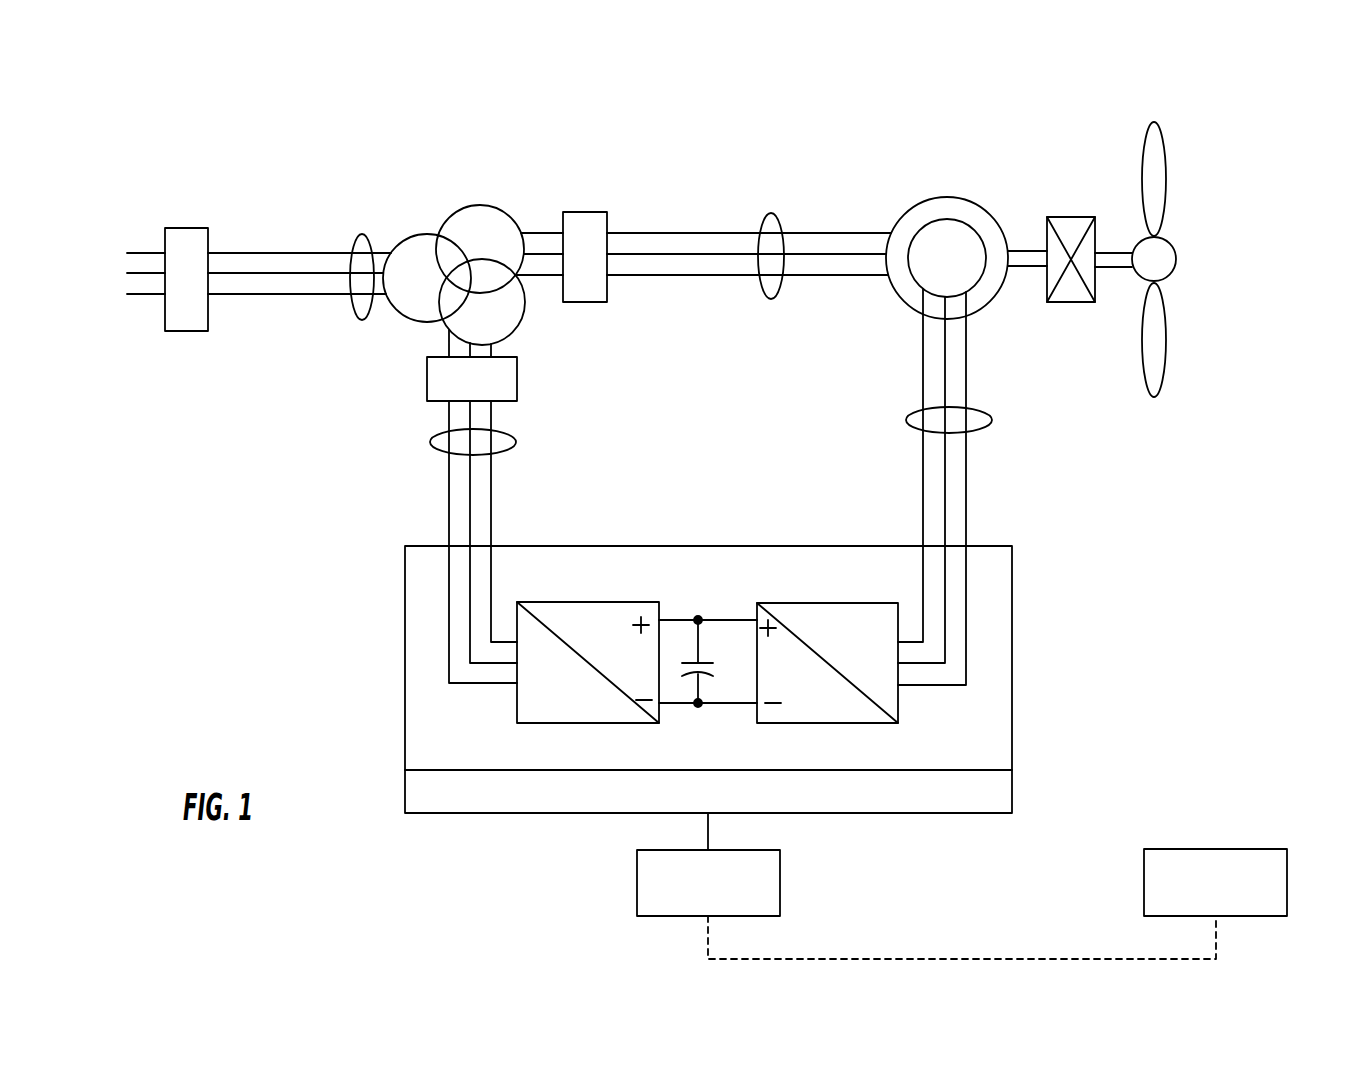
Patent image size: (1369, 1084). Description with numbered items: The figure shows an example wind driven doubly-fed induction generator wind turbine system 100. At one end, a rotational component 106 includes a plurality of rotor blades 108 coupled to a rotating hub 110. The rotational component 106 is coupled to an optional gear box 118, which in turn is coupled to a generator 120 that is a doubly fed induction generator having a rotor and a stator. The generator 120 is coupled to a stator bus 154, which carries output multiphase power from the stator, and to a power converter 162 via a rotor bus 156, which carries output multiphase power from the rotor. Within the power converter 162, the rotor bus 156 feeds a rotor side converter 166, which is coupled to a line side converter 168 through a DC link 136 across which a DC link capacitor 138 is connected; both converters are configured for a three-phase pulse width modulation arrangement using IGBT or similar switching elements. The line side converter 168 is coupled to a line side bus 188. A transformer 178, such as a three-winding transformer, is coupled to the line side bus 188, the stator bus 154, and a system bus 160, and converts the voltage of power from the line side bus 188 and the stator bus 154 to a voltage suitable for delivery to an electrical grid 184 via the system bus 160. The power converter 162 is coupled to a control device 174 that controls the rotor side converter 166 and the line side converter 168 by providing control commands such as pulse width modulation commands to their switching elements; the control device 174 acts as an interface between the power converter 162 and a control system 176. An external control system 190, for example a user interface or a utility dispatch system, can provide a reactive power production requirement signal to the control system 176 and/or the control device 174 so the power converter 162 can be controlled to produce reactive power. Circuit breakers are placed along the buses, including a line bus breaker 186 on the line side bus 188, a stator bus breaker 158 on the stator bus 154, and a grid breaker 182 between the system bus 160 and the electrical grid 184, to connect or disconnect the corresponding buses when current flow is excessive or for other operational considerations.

The DFIG wind turbine system 100 is at (814, 118).
The rotational component 106 is at (1203, 255).
The rotor blades 108 is at (1168, 172).
The rotating hub 110 is at (1177, 262).
The gear box 118 is at (1070, 217).
The generator 120 is at (947, 197).
The DC link 136 is at (718, 620).
The DC link capacitor 138 is at (685, 676).
The stator bus 154 is at (772, 213).
The rotor bus 156 is at (992, 418).
The stator bus breaker 158 is at (590, 212).
The system bus 160 is at (362, 233).
The power converter 162 is at (1012, 622).
The rotor side converter 166 is at (898, 703).
The line side converter 168 is at (517, 703).
The control device 174 is at (1012, 798).
The control system 176 is at (780, 882).
The transformer 178 is at (477, 207).
The grid breaker 182 is at (187, 228).
The electrical grid 184 is at (106, 265).
The line bus breaker 186 is at (427, 380).
The line side bus 188 is at (430, 445).
The external control system 190 is at (1287, 882).